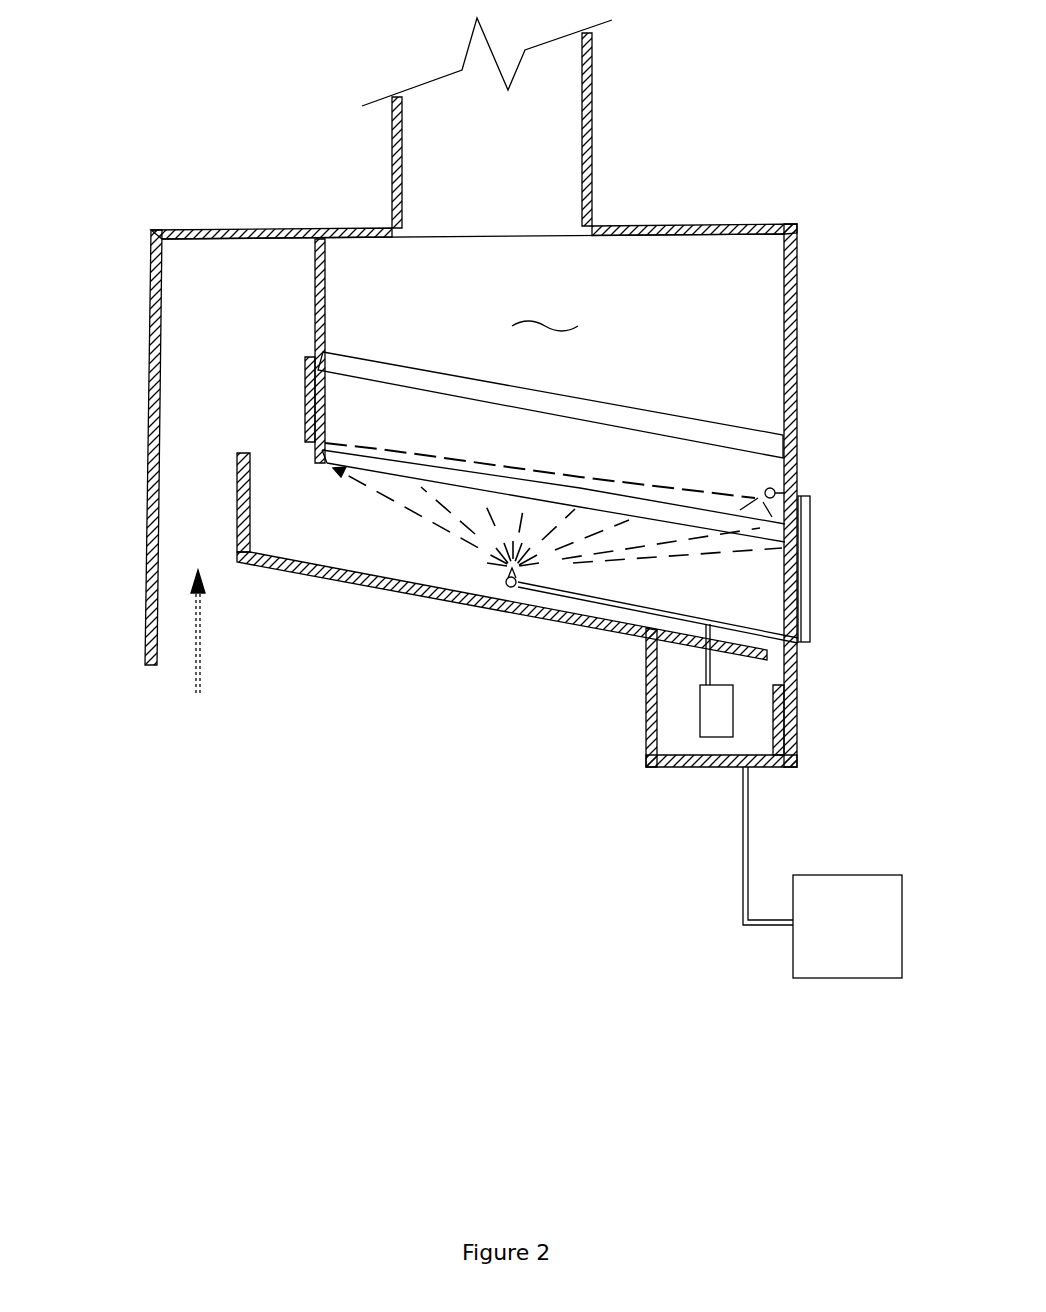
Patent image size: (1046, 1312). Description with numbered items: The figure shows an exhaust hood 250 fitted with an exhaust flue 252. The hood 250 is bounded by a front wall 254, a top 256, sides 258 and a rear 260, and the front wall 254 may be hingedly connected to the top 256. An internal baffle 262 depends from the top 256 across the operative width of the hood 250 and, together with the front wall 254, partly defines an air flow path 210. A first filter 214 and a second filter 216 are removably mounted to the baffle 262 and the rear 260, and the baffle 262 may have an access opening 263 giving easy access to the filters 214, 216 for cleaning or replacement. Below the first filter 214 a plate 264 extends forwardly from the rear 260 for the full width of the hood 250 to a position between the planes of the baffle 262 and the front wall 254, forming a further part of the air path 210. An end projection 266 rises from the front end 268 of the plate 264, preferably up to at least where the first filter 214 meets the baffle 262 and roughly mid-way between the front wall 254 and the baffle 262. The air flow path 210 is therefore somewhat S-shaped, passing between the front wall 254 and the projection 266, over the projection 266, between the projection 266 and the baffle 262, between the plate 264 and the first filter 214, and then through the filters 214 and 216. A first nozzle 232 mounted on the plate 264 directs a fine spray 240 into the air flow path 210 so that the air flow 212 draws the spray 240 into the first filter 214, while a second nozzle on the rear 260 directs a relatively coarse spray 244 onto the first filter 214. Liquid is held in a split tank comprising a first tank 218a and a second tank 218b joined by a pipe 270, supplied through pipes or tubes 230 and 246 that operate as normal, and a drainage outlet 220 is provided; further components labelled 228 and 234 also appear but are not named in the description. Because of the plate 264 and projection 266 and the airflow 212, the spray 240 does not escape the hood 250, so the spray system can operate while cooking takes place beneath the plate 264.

The air flow path 210 is at (197, 509).
The air flow 212 is at (191, 651).
The first filter 214 is at (763, 534).
The second filter 216 is at (732, 435).
The first tank 218a is at (768, 670).
The second tank 218b is at (859, 904).
The drainage outlet 220 is at (821, 626).
The pump 228 is at (722, 720).
The pipe/tube 230 is at (711, 605).
The first nozzle 232 is at (515, 593).
The pivot 234 is at (822, 472).
The fine spray 240 is at (468, 545).
The coarse spray 244 is at (614, 444).
The pipe/tube 246 is at (812, 508).
The exhaust hood 250 is at (483, 392).
The exhaust flue 252 is at (595, 178).
The front wall 254 is at (145, 567).
The top 256 is at (353, 227).
The sides 258 is at (545, 310).
The rear 260 is at (797, 312).
The internal baffle 262 is at (310, 307).
The access opening 263 is at (303, 392).
The plate 264 is at (502, 653).
The end projection 266 is at (170, 498).
The front end 268 is at (267, 565).
The pipe 270 is at (748, 853).